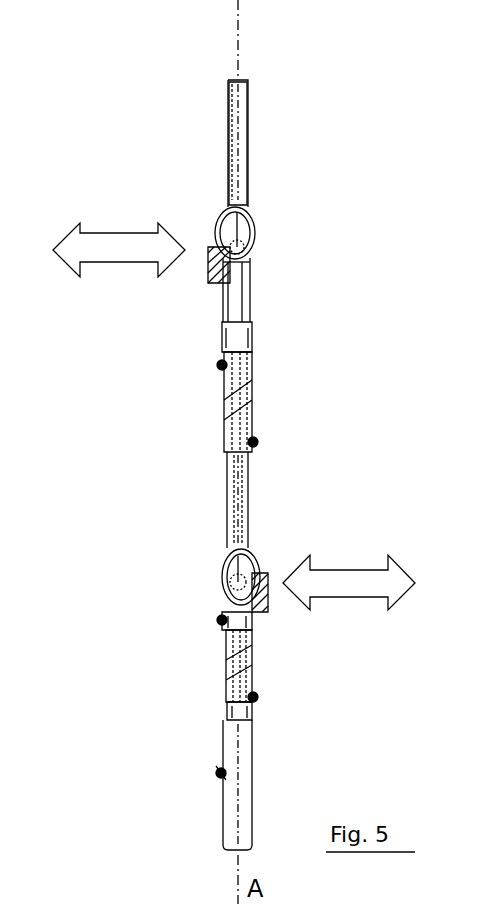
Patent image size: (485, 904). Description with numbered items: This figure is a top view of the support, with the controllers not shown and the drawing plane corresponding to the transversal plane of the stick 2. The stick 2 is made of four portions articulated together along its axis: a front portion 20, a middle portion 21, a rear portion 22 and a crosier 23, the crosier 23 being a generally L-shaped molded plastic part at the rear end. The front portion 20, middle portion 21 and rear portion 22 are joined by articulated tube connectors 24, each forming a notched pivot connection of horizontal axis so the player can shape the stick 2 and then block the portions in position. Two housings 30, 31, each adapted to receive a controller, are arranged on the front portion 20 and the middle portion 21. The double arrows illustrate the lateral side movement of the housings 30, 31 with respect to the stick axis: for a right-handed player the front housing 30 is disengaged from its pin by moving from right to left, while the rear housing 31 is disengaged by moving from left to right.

The stick 2 is at (226, 168).
The front portion 20 is at (246, 147).
The middle portion 21 is at (247, 511).
The rear portion 22 is at (248, 714).
The crosier 23 is at (254, 773).
The articulated tube connector 24 is at (248, 378).
The front housing 30 is at (253, 234).
The rear housing 31 is at (223, 567).